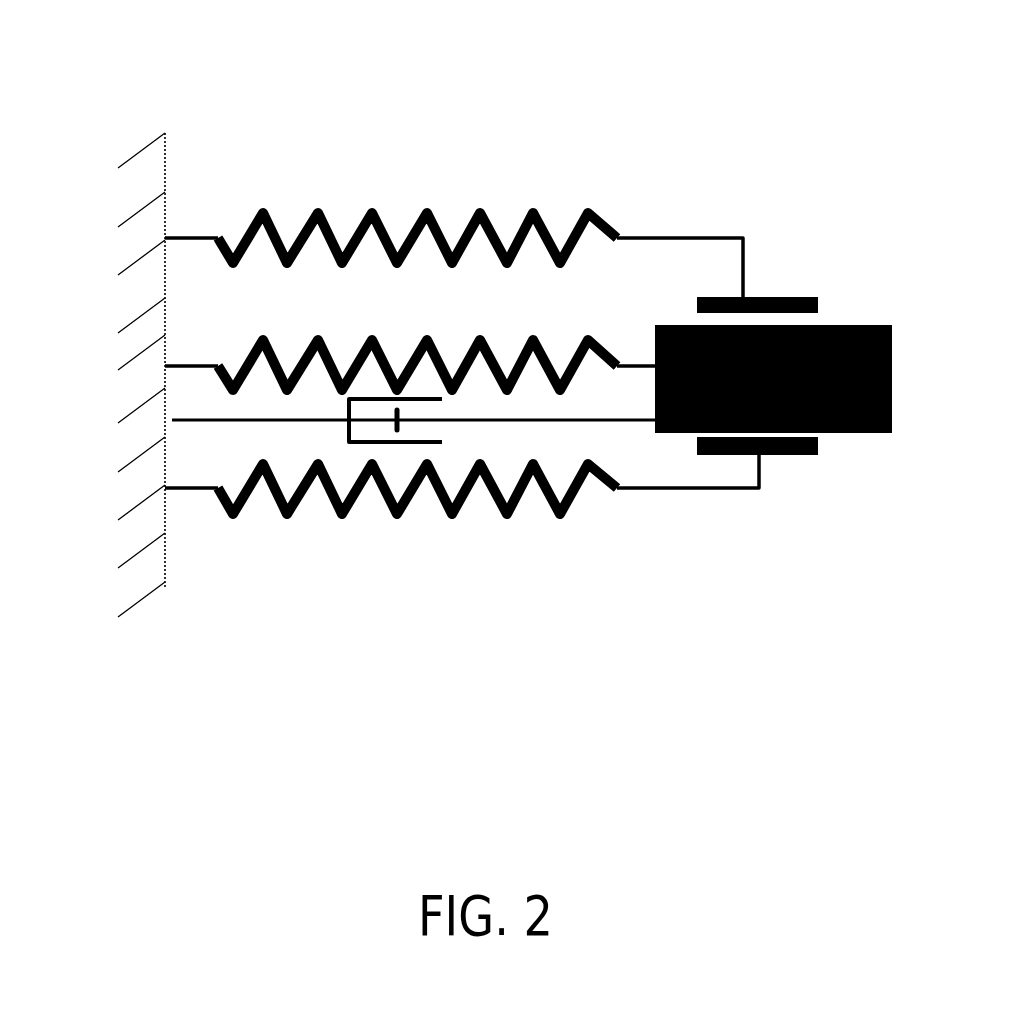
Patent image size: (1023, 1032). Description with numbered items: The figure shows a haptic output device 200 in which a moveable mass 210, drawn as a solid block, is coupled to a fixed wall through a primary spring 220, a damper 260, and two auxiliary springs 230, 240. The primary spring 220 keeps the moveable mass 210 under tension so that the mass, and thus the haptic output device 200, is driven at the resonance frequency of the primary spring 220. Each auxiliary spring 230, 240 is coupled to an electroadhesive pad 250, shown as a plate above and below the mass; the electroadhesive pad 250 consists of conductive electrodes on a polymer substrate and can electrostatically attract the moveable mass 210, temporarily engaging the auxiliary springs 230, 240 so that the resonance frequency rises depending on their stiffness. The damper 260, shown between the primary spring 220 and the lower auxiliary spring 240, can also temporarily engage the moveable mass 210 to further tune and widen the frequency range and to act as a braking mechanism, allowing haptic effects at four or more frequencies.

The haptic output device 200 is at (888, 40).
The moveable mass 210 is at (897, 385).
The primary spring 220 is at (435, 326).
The auxiliary spring 230 is at (413, 205).
The auxiliary spring 240 is at (458, 520).
The electroadhesive pad 250 is at (777, 297).
The damper 260 is at (595, 422).